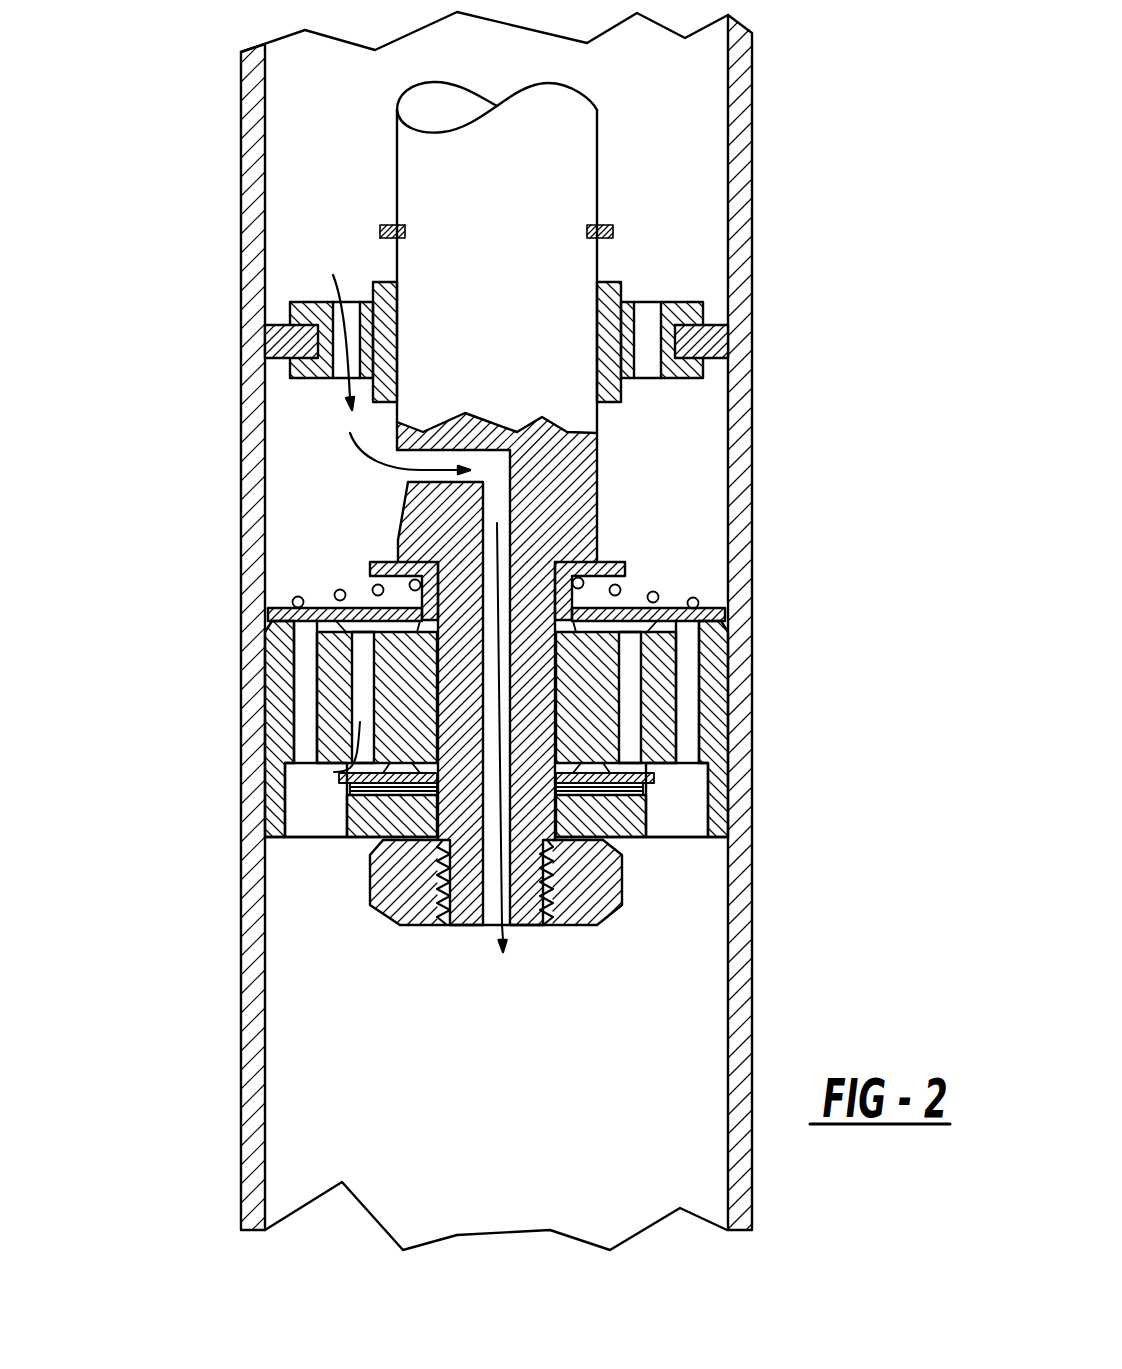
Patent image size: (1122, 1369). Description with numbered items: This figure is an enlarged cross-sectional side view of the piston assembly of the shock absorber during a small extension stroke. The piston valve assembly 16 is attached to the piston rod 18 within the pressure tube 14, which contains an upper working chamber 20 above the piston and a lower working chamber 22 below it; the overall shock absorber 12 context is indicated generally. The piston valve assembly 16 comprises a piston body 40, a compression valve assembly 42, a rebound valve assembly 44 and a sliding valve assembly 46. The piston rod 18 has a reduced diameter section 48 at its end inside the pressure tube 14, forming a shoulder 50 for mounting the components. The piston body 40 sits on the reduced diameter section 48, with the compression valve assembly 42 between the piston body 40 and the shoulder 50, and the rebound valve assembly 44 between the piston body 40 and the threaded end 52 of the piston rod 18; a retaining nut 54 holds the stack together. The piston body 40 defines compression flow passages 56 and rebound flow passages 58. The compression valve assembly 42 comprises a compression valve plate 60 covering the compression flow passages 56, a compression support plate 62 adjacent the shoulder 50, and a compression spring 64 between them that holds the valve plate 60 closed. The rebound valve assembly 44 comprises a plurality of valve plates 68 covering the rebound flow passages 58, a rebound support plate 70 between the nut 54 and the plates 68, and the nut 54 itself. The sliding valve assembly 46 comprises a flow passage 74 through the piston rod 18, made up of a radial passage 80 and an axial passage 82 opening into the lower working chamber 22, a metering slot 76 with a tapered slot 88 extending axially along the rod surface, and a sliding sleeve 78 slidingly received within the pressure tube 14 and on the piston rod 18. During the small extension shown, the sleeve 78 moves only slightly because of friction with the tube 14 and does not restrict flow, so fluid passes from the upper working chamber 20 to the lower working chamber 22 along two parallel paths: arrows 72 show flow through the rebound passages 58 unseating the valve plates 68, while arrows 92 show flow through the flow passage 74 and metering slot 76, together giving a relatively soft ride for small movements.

The gas spring assembly 12 is at (340, 204).
The pressure tube 14 is at (752, 103).
The piston valve assembly 16 is at (185, 558).
The piston rod 18 is at (462, 190).
The upper working chamber 20 is at (645, 130).
The lower working chamber 22 is at (488, 1132).
The piston body 40 is at (717, 732).
The compression valve assembly 42 is at (703, 577).
The rebound valve assembly 44 is at (325, 866).
The sliding valve assembly 46 is at (294, 401).
The reduced diameter section 48 is at (455, 692).
The shoulder 50 is at (623, 570).
The threaded end 52 is at (523, 881).
The retaining nut 54 is at (593, 901).
The compression flow passages 56 is at (683, 687).
The rebound flow passages 58 is at (360, 658).
The compression valve plate 60 is at (712, 612).
The compression support plate 62 is at (372, 565).
The compression spring 64 is at (656, 596).
The valve plates 68 is at (648, 784).
The rebound support plate 70 is at (623, 818).
The arrows 72 is at (320, 807).
The flow passage 74 is at (497, 495).
The metering slot 76 is at (366, 488).
The sliding sleeve 78 is at (680, 320).
The radial passage 80 is at (444, 458).
The axial passage 82 is at (490, 875).
The tapered slot 88 is at (407, 502).
The arrows 92 is at (370, 449).